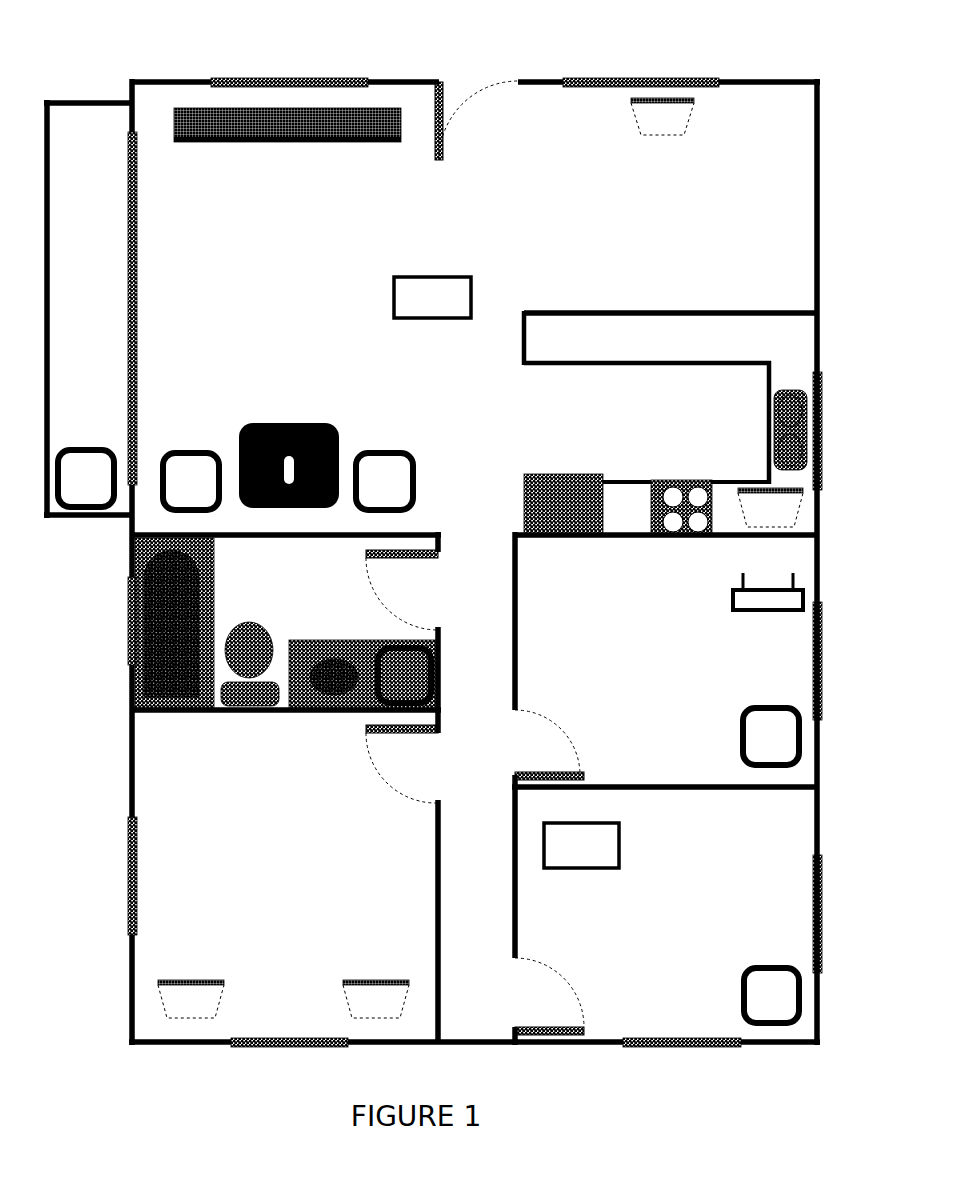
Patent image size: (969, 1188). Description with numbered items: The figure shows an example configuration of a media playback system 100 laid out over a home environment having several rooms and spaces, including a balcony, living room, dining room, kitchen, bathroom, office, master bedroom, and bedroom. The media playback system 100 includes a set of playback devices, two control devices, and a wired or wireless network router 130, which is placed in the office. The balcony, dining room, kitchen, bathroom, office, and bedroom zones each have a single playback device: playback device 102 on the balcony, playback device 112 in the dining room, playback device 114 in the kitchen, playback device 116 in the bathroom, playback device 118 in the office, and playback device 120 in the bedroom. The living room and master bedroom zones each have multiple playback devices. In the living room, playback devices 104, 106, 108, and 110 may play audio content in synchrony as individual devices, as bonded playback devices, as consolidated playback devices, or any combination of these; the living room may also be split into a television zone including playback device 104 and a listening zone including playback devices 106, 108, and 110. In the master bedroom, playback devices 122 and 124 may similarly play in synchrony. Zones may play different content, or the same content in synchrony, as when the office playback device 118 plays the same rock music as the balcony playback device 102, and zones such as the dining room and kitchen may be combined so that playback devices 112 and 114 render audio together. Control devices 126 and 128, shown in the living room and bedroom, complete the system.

The media playback system 100 is at (519, 44).
The playback device 102 is at (67, 490).
The playback device 104 is at (268, 135).
The playback device 106 is at (172, 493).
The playback device 108 is at (366, 493).
The playback device 110 is at (270, 450).
The playback device 112 is at (643, 130).
The playback device 114 is at (751, 522).
The playback device 116 is at (386, 687).
The playback device 118 is at (752, 748).
The playback device 120 is at (753, 1007).
The playback device 122 is at (172, 1013).
The playback device 124 is at (357, 1013).
The control device 126 is at (413, 309).
The control device 128 is at (562, 857).
The network router 130 is at (730, 600).